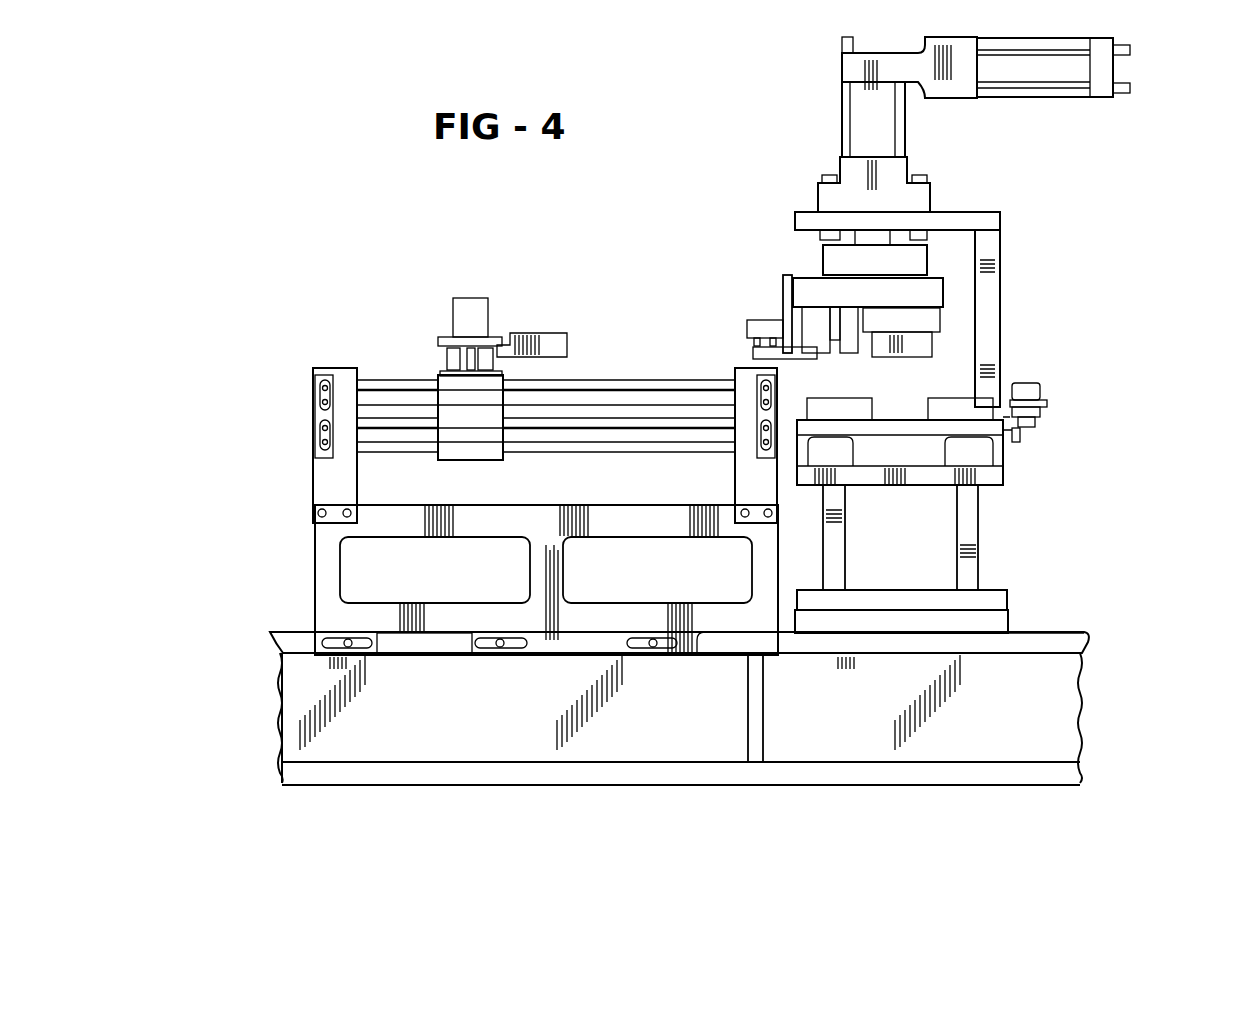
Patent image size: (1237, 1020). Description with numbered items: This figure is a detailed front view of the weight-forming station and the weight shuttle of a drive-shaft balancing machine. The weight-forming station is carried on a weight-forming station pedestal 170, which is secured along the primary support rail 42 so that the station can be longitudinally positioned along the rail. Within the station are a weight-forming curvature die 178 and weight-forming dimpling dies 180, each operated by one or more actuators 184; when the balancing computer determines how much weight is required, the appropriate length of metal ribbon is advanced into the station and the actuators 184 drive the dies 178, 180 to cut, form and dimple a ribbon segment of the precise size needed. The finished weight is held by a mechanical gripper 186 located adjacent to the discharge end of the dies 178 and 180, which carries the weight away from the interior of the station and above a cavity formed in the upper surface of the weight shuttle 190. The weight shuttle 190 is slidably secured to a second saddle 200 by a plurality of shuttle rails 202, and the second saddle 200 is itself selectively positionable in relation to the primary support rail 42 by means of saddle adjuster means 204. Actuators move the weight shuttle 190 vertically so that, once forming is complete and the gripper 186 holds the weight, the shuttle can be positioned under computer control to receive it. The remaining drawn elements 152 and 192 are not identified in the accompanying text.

The primary support rail 42 is at (855, 727).
The saddle adjuster means 204 is at (287, 656).
The support surface 152 is at (1058, 652).
The second saddle 200 is at (318, 553).
The shuttle rails 202 is at (670, 383).
The weight shuttle 190 is at (523, 340).
The actuator cylinder 192 is at (450, 358).
The weight-forming station pedestal 170 is at (973, 510).
The actuators 184 is at (897, 131).
The weight-forming dimpling dies 180 is at (800, 306).
The weight-forming curvature die 178 is at (913, 335).
The mechanical gripper 186 is at (750, 325).